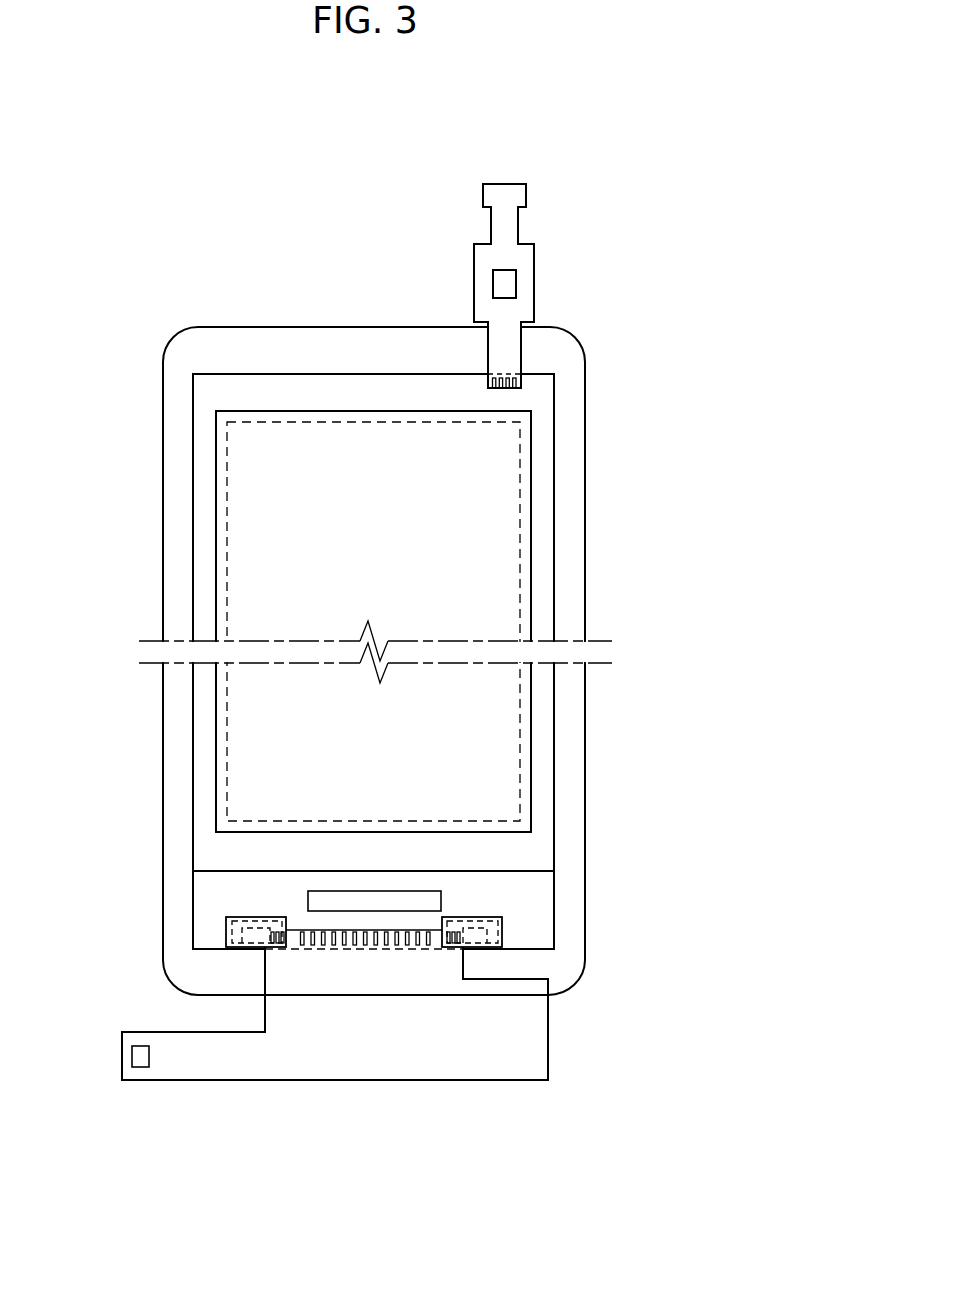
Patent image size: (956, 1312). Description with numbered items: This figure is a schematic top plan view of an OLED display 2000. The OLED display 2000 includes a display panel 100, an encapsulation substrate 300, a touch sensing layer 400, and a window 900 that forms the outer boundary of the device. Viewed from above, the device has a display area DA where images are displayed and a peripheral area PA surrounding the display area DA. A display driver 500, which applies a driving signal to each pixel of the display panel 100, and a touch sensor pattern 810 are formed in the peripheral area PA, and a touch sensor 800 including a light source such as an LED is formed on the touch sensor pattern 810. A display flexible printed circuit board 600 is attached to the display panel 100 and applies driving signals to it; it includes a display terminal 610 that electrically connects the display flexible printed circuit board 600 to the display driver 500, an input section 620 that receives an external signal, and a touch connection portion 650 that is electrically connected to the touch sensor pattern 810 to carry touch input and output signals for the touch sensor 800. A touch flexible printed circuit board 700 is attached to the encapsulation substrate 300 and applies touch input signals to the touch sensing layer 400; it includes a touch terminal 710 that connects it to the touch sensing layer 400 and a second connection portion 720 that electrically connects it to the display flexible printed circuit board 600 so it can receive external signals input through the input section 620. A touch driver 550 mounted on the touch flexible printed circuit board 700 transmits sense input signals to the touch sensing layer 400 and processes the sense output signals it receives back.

The OLED display 2000 is at (400, 174).
The display panel 100 is at (455, 621).
The peripheral area PA is at (543, 439).
The display area DA is at (520, 708).
The encapsulation substrate 300 is at (522, 872).
The touch sensing layer 400 is at (533, 493).
The display driver 500 is at (332, 891).
The touch driver 550 is at (516, 278).
The display flexible printed circuit board 600 is at (335, 1067).
The display terminal 610 is at (345, 946).
The input section 620 is at (142, 1067).
The touch connection portion 650 is at (270, 935).
The touch flexible printed circuit board 700 is at (589, 600).
The touch terminal 710 is at (500, 388).
The second connection portion 720 is at (526, 195).
The touch sensor 800 is at (226, 928).
The touch sensor pattern 810 is at (247, 920).
The window 900 is at (587, 559).